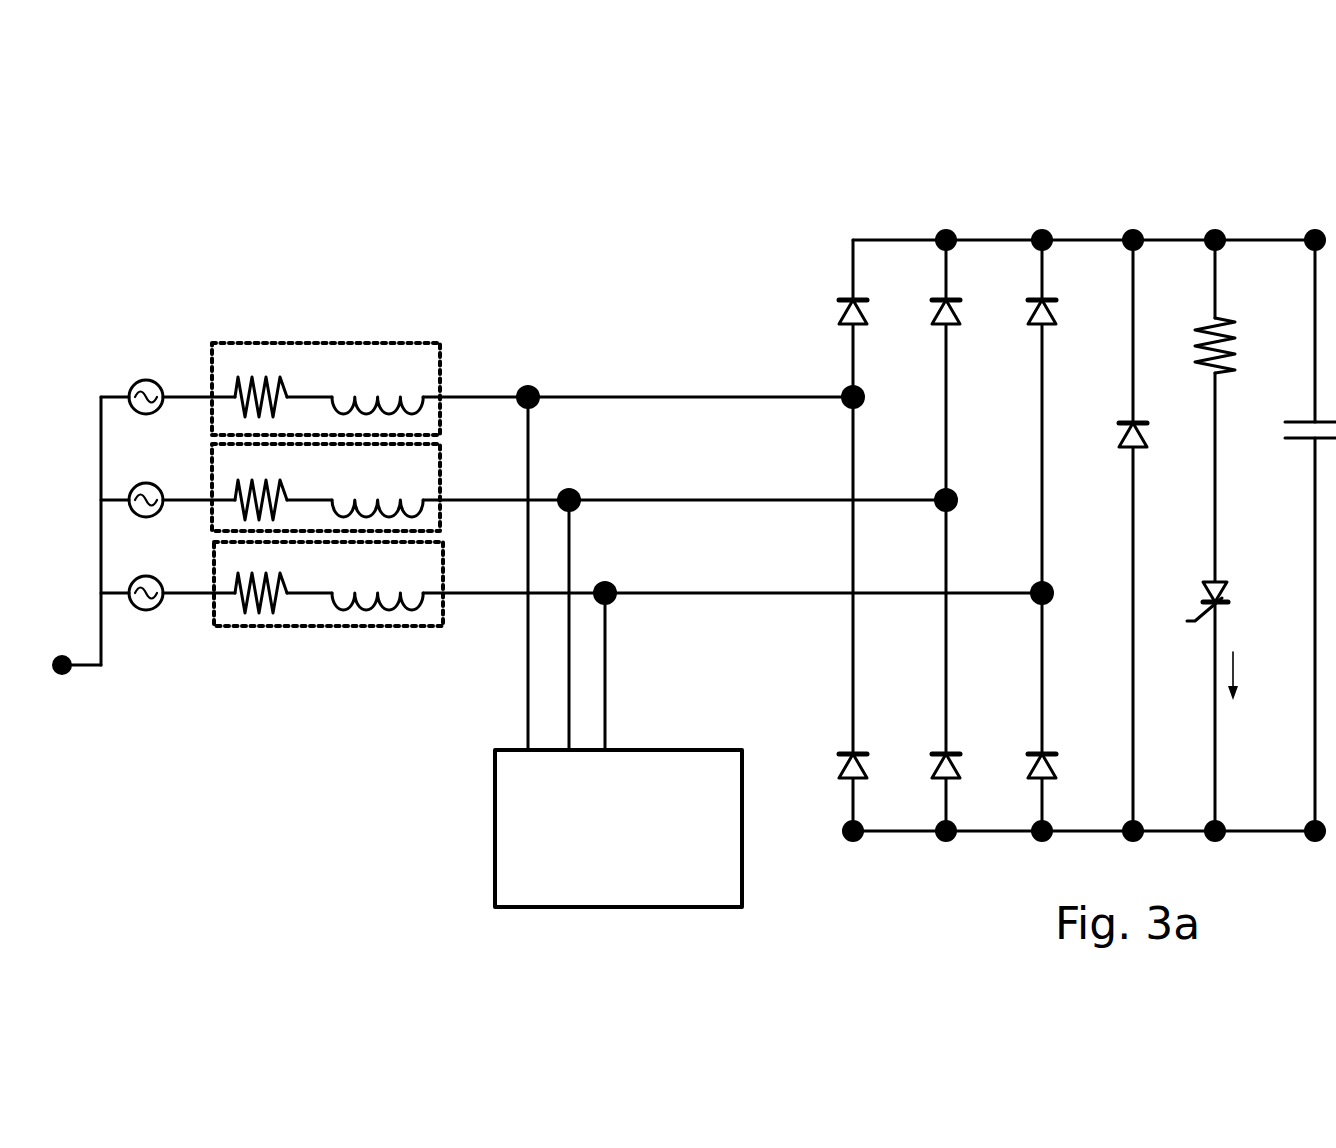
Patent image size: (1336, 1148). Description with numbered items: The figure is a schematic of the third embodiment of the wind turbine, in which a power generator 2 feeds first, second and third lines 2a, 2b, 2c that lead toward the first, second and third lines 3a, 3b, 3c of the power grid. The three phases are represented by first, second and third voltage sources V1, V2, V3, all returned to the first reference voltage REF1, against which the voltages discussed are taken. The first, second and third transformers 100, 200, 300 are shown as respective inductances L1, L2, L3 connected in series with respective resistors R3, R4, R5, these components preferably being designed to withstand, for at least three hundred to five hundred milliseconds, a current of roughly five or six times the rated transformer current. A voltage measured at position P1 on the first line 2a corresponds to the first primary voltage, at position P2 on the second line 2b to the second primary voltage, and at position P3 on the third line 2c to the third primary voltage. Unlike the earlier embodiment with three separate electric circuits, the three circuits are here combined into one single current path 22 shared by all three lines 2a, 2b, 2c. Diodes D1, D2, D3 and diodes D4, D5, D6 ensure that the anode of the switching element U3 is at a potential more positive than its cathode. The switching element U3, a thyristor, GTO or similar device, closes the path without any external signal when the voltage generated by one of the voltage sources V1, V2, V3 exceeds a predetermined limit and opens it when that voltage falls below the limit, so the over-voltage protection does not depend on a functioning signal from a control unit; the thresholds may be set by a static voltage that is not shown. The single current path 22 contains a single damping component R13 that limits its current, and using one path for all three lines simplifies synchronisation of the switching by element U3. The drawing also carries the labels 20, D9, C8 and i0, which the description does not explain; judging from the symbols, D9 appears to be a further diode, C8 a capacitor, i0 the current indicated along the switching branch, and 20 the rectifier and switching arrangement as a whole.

The power generator 2 is at (495, 838).
The three-phase rectifier circuit 20 is at (1065, 454).
The single current path 22 is at (1212, 750).
The first transformer 100 is at (326, 337).
The second transformer 200 is at (360, 510).
The third transformer 300 is at (328, 634).
The first line 3a is at (197, 395).
The second line 3b is at (212, 499).
The third line 3c is at (205, 592).
The first line 2a is at (657, 394).
The second line 2b is at (703, 499).
The third line 2c is at (732, 593).
The first position P1 is at (528, 537).
The second position P2 is at (568, 597).
The third position P3 is at (611, 647).
The first voltage source V1 is at (132, 382).
The second voltage source V2 is at (132, 485).
The third voltage source V3 is at (132, 579).
The resistor R3 is at (261, 383).
The resistor R4 is at (261, 486).
The resistor R5 is at (261, 580).
The inductance L1 is at (377, 382).
The inductance L2 is at (377, 485).
The inductance L3 is at (377, 579).
The diode D1 is at (831, 324).
The diode D2 is at (923, 376).
The diode D3 is at (1019, 422).
The diode D4 is at (832, 614).
The diode D5 is at (925, 665).
The diode D6 is at (1021, 712).
The diode D9 is at (1106, 535).
The damping component R13 is at (1185, 411).
The capacitor C8 is at (1299, 535).
The switching element U3 is at (1196, 700).
The output current i0 is at (1247, 676).
The first reference voltage REF1 is at (70, 554).